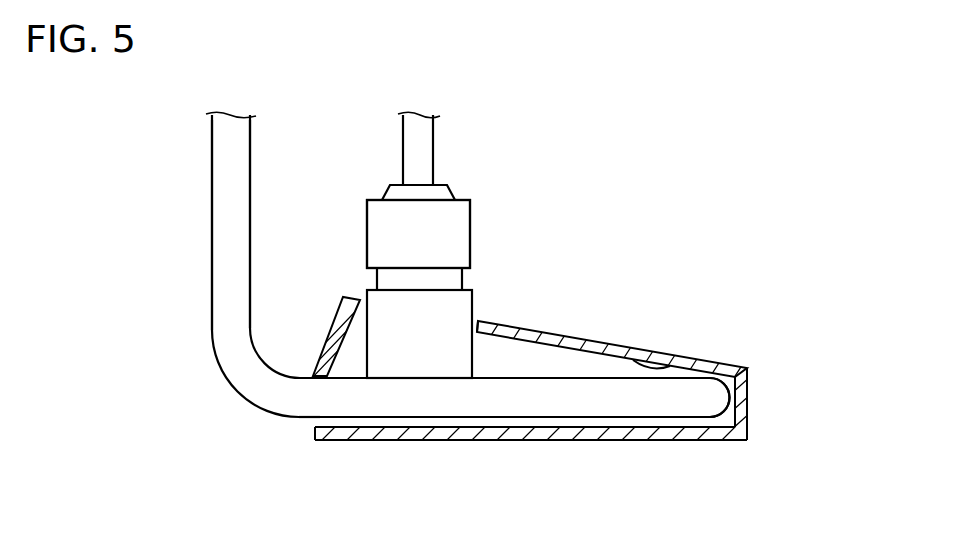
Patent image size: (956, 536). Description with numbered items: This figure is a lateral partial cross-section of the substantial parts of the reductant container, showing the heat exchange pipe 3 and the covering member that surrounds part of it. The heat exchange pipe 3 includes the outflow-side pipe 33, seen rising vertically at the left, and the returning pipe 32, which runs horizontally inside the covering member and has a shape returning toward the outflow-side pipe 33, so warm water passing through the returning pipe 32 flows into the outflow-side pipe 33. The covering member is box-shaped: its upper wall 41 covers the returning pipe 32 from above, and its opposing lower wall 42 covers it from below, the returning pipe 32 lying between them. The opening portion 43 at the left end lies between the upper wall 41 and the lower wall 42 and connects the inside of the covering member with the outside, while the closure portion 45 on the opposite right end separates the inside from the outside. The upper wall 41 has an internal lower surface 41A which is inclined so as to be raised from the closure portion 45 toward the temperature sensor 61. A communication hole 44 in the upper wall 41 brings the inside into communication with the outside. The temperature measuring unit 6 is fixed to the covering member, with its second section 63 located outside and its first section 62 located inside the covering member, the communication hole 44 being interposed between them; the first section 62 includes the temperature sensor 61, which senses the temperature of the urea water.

The heat exchange pipe 3 is at (200, 162).
The outflow-side pipe 33 is at (222, 256).
The returning pipe 32 is at (700, 400).
The temperature measuring unit 6 is at (462, 222).
The second section 63 is at (380, 249).
The temperature sensor 61 is at (452, 303).
The first section 62 is at (382, 325).
The upper wall 41 is at (603, 344).
The lower surface 41A is at (688, 356).
The lower wall 42 is at (556, 431).
The opening portion 43 is at (308, 426).
The communication hole 44 is at (476, 320).
The closure portion 45 is at (748, 396).